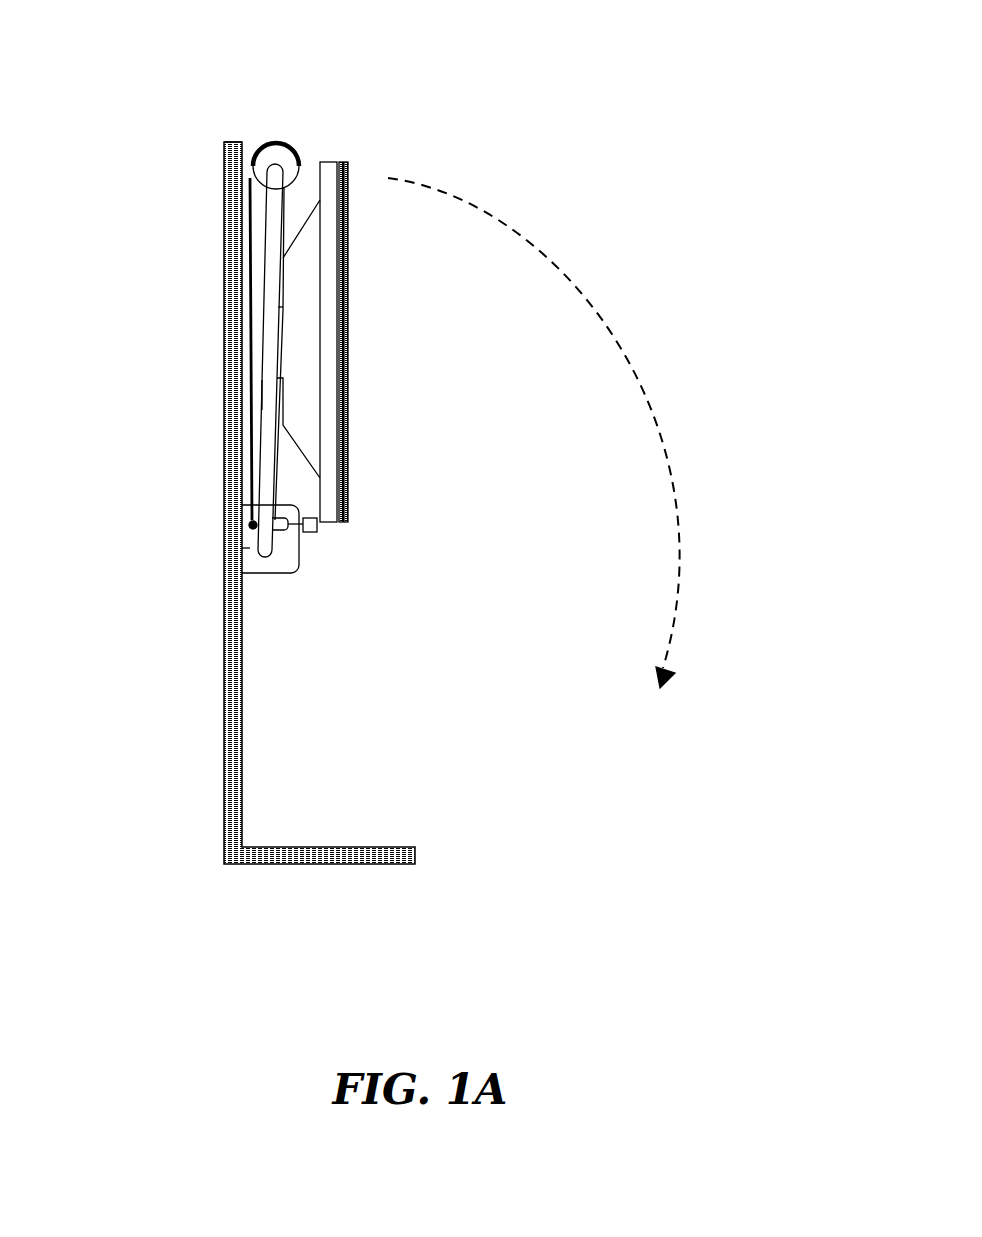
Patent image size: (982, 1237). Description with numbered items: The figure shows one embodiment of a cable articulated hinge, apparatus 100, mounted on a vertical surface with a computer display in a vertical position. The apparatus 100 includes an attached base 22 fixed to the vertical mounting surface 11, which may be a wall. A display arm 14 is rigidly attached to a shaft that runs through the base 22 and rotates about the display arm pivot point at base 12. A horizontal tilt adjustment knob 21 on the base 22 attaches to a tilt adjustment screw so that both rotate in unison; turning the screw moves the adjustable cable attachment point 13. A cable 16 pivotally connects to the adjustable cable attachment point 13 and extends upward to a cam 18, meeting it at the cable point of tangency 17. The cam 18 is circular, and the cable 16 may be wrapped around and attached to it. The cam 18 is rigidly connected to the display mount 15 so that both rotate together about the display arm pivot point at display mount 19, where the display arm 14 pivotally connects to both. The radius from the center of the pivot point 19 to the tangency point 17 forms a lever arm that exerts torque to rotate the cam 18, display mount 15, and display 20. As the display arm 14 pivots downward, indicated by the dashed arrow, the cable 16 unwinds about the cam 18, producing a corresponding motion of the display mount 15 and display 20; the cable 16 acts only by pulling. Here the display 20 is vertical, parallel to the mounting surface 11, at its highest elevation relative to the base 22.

The apparatus 100 is at (532, 120).
The vertical mounting surface 11 is at (227, 687).
The display arm pivot point at base 12 is at (242, 548).
The adjustable cable attachment point 13 is at (250, 526).
The display arm 14 is at (262, 393).
The display mount 15 is at (265, 248).
The cable 16 is at (250, 200).
The cable point of tangency 17 is at (226, 160).
The cam 18 is at (268, 143).
The display arm pivot point at display mount 19 is at (283, 144).
The display 20 is at (343, 302).
The horizontal tilt adjustment knob 21 is at (317, 527).
The attached base 22 is at (282, 573).